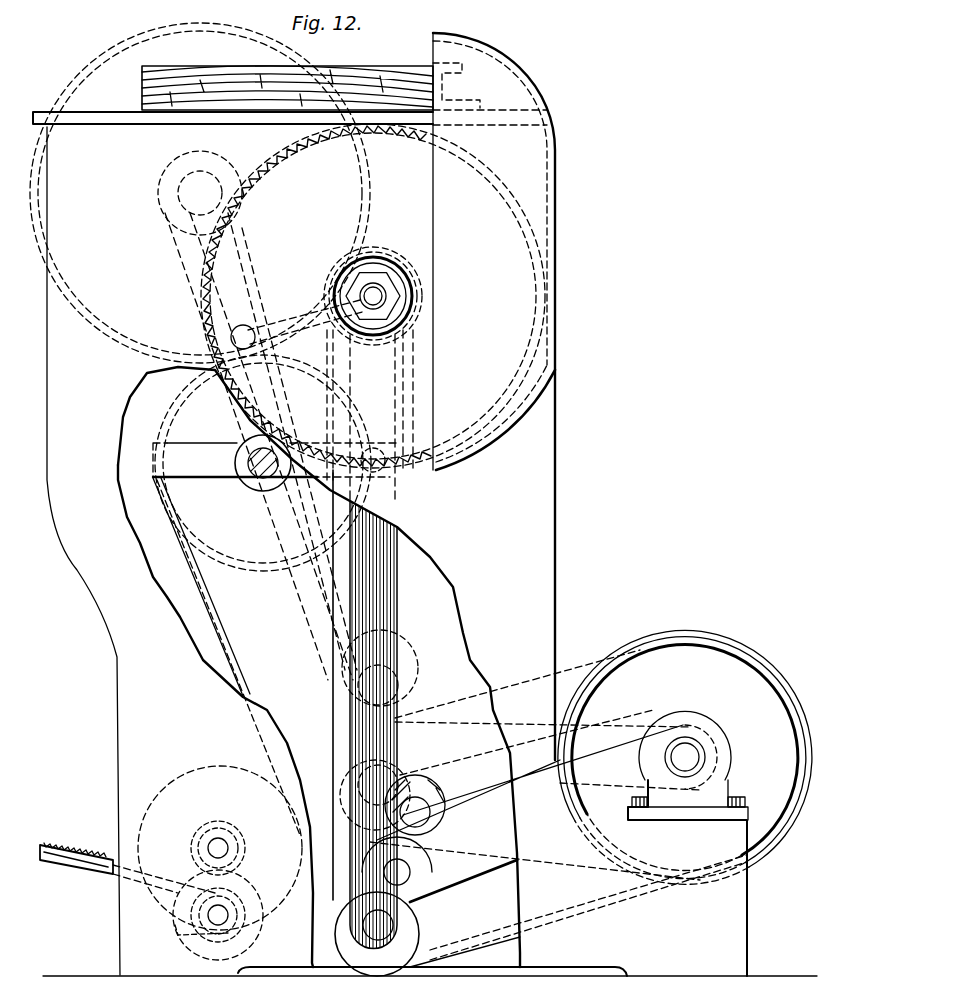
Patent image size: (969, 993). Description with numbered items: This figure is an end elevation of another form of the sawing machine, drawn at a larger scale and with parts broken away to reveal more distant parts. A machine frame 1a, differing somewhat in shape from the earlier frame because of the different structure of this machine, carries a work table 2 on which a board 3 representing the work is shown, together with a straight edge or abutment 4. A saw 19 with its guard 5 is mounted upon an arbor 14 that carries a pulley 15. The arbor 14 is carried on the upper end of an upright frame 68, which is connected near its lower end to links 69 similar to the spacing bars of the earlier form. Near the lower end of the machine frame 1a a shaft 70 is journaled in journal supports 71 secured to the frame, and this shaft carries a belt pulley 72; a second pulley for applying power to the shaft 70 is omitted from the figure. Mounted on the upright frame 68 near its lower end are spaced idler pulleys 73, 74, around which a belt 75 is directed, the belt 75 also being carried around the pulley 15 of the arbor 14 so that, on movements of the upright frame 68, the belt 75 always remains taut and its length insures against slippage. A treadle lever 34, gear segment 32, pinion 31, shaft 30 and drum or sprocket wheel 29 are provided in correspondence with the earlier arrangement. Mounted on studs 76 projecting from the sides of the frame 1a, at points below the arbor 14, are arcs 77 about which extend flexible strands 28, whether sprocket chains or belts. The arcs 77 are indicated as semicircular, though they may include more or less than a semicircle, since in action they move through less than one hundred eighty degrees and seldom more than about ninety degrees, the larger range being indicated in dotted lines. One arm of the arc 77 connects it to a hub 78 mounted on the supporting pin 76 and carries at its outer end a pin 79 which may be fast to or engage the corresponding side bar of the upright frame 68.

The machine frame 1a is at (547, 527).
The work table 2 is at (102, 125).
The board 3 is at (155, 82).
The straight edge or abutment 4 is at (436, 52).
The guard 5 is at (545, 360).
The arbor 14 is at (380, 292).
The pulley 15 is at (392, 257).
The saw 19 is at (93, 322).
The flexible strands 28 is at (210, 605).
The drum or sprocket wheel 29 is at (175, 786).
The shaft 30 is at (212, 843).
The pinion 31 is at (236, 840).
The gear segment 32 is at (258, 890).
The treadle lever 34 is at (118, 890).
The upright frame 68 is at (375, 590).
The links 69 is at (470, 868).
The shaft 70 is at (690, 754).
The journal supports 71 is at (733, 762).
The belt pulley 72 is at (685, 758).
The idler pulley 73 is at (402, 765).
The idler pulley 74 is at (414, 667).
The belt 75 is at (683, 630).
The studs 76 is at (262, 479).
The arcs 77 is at (165, 428).
The hub 78 is at (248, 478).
The pin 79 is at (245, 335).